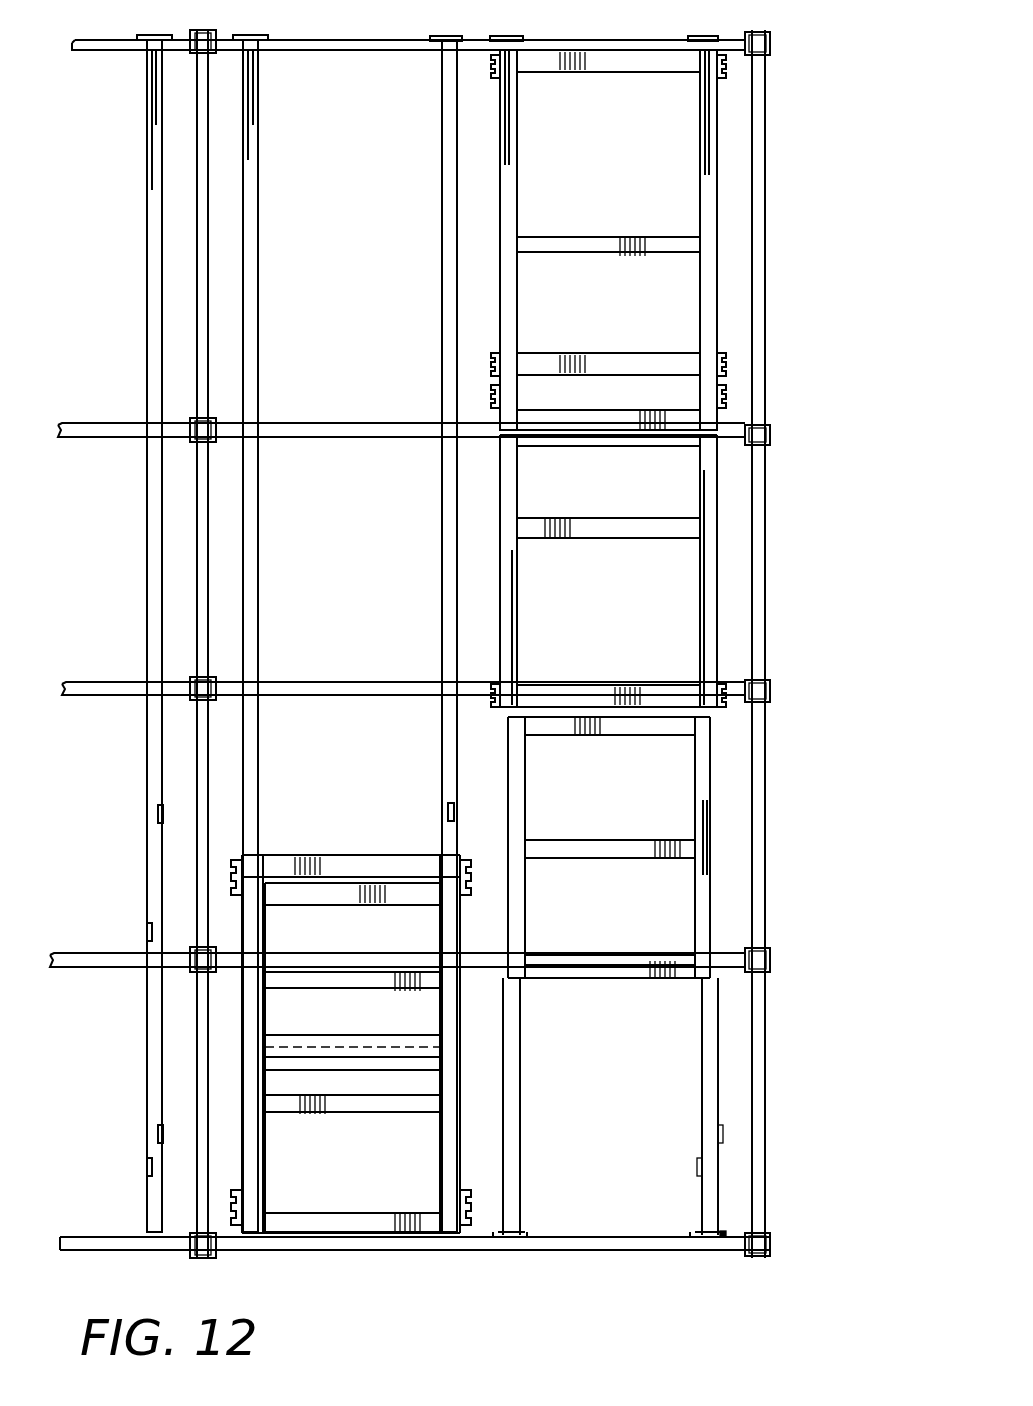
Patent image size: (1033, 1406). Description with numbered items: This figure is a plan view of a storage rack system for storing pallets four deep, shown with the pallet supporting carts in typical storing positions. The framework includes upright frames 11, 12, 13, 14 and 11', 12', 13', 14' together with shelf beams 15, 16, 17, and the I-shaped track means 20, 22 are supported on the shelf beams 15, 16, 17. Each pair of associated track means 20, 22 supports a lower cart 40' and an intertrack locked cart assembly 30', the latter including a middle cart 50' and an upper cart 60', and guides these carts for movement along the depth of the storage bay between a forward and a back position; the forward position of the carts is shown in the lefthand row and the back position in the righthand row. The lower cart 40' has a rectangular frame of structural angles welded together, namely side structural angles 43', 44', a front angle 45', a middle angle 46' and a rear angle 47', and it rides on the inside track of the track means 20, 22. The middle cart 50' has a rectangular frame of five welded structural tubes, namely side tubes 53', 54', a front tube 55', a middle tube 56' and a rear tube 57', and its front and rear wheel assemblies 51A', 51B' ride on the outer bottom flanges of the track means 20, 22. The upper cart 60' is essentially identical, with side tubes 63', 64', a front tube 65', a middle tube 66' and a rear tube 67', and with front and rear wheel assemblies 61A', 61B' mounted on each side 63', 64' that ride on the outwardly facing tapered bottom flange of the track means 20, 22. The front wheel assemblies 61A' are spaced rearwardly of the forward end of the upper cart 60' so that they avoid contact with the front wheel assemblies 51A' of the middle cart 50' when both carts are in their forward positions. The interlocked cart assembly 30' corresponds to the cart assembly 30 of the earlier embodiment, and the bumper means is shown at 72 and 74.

The shelf beam 17 is at (322, 40).
The shelf beam 16 is at (355, 385).
The shelf beam 15 is at (622, 1252).
The upright frame 14' is at (258, 229).
The upright frame 13' is at (258, 553).
The upright frame 12' is at (258, 818).
The upright frame 11' is at (155, 1102).
The upright frame 14 is at (650, 540).
The upright frame 13 is at (657, 669).
The upright frame 12 is at (787, 820).
The upright frame 11 is at (787, 1103).
The upper cart 60' is at (600, 641).
The side tube 63' is at (543, 240).
The side tube 64' is at (669, 240).
The rear tube 67' is at (608, 89).
The middle tube 66' is at (608, 218).
The rear tube 57' is at (608, 337).
The front tube 65' is at (608, 405).
The rear wheel assembly 61B' is at (602, 99).
The rear wheel assembly 51B' is at (607, 325).
The front wheel assembly 61A' is at (600, 373).
The interlocked cart assembly 30 is at (602, 598).
The side tube 53' is at (545, 571).
The side tube 54' is at (672, 571).
The middle tube 56' is at (608, 501).
The front tube 55' is at (608, 671).
The front wheel assembly 51A' is at (602, 722).
The lower cart 40' is at (487, 974).
The side structural angle 43' is at (547, 847).
The side structural angle 44' is at (660, 847).
The rear angle 47' is at (609, 746).
The middle angle 46' is at (610, 827).
The front angle 45' is at (609, 1000).
The interlocked cart assembly 30' is at (351, 1044).
The middle cart 50' is at (546, 690).
The I-shaped track means 22 is at (514, 1160).
The I-shaped track means 20 is at (703, 1108).
The bumper means 72 is at (522, 1238).
The bumper means 74 is at (727, 1242).